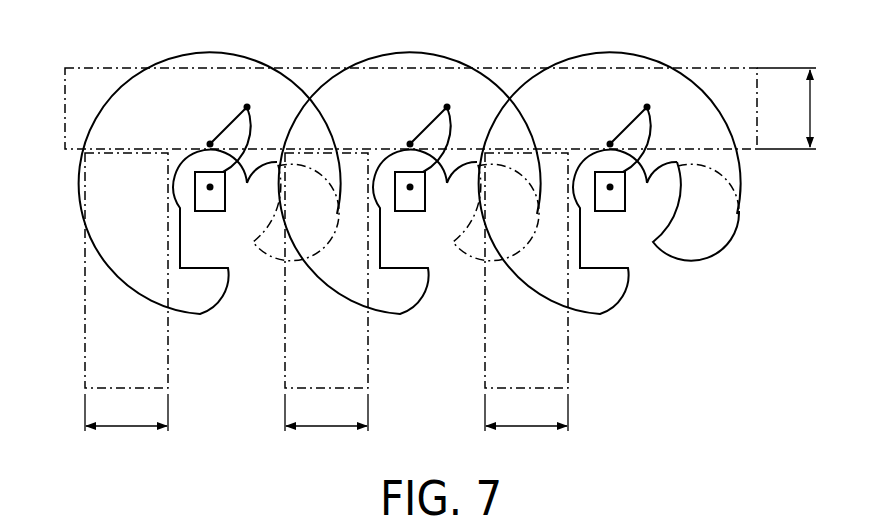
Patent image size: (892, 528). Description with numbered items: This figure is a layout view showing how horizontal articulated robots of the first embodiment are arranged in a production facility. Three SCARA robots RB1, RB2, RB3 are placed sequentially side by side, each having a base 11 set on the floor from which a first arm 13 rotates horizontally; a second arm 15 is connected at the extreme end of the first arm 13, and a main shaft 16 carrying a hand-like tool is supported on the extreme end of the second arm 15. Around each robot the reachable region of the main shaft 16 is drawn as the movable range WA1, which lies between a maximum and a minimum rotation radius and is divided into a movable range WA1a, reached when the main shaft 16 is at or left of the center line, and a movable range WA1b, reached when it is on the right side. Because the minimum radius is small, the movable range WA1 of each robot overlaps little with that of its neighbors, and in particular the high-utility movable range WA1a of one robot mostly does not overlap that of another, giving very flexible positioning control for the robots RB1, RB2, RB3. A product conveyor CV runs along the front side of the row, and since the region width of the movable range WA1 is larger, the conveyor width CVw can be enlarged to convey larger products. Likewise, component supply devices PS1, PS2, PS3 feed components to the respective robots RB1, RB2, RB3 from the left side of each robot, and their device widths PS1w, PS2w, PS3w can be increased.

The base 11 is at (226, 199).
The first arm 13 is at (252, 132).
The second arm 15 is at (226, 127).
The main shaft 16 is at (205, 143).
The movable range WA1 is at (207, 54).
The movable range (left-side/right-armed region) WA1a is at (200, 316).
The movable range (right-side region) WA1b is at (254, 245).
The robot RB1 is at (212, 213).
The robot RB2 is at (412, 213).
The robot RB3 is at (612, 213).
The component supply device PS1 is at (170, 370).
The component supply device PS2 is at (370, 370).
The component supply device PS3 is at (570, 370).
The device width PS1w is at (126, 424).
The device width PS2w is at (326, 424).
The device width PS3w is at (526, 424).
The product conveyor CV is at (715, 67).
The conveyor width CVw is at (786, 108).